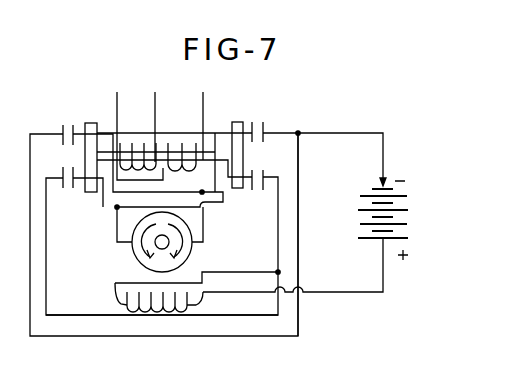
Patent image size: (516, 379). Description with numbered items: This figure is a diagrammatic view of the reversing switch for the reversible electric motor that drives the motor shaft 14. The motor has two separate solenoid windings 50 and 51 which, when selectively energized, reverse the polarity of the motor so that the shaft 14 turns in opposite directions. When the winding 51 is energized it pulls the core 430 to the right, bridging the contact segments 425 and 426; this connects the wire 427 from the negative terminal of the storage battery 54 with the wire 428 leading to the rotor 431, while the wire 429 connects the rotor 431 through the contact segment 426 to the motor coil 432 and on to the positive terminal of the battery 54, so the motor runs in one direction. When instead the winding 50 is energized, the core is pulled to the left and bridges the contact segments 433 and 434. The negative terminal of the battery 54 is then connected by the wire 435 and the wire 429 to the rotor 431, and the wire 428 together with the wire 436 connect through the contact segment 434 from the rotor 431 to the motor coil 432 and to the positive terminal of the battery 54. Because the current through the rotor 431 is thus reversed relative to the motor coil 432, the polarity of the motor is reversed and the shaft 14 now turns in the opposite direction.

The motor shaft 14 is at (138, 268).
The solenoid winding 50 is at (138, 137).
The solenoid winding 51 is at (183, 137).
The storage battery 54 is at (402, 200).
The contact segment 425 is at (257, 123).
The contact segment 426 is at (260, 193).
The wire 427 is at (328, 127).
The wire 428 is at (115, 222).
The wire 429 is at (207, 225).
The core 430 is at (223, 128).
The rotor 431 is at (188, 250).
The motor coil 432 is at (140, 306).
The contact segment 433 is at (66, 124).
The contact segment 434 is at (67, 189).
The wire 435 is at (299, 224).
The wire 436 is at (85, 315).